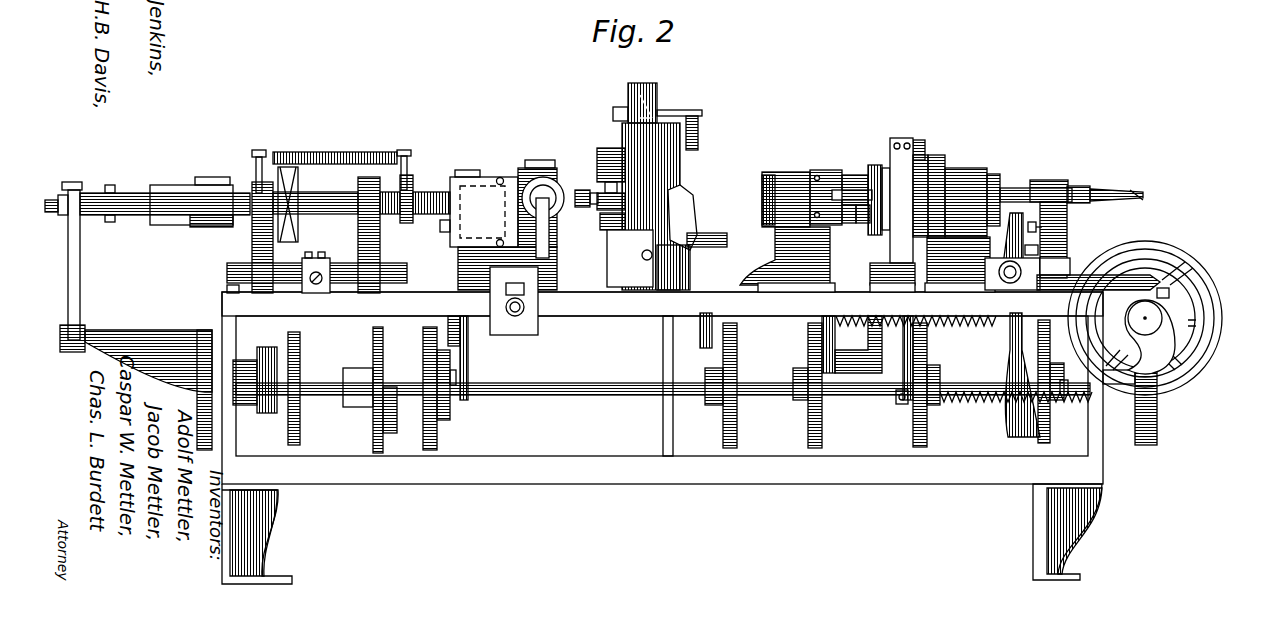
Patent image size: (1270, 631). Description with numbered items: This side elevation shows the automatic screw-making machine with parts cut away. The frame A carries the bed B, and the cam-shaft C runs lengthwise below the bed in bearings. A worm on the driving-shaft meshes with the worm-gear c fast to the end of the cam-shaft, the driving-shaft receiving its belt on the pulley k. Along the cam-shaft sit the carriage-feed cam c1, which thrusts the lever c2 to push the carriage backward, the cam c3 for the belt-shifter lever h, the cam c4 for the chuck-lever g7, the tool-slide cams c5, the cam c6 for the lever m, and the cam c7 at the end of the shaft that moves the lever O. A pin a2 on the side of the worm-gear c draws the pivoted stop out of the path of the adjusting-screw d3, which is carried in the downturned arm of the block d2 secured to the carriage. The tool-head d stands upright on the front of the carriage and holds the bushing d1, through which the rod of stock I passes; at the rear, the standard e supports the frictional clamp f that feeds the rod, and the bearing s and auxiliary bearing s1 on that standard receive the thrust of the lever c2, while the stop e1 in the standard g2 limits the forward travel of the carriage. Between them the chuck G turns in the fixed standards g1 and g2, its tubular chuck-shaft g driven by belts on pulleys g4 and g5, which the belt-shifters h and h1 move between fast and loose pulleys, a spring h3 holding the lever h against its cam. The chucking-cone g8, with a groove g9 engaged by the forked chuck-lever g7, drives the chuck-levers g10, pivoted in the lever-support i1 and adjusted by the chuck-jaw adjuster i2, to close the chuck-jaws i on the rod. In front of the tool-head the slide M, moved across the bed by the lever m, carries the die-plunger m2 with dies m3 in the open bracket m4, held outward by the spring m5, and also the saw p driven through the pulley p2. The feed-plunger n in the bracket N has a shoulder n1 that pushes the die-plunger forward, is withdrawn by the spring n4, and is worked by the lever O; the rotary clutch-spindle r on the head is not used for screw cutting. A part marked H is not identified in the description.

The frame A is at (662, 438).
The bed B is at (662, 304).
The cam-shaft C is at (663, 401).
The worm-gear c is at (1157, 412).
The carriage-feed cam c1 is at (1051, 425).
The lever c2 is at (1031, 256).
The cam c3 is at (928, 425).
The cam c4 is at (823, 428).
The tool-slide cams c5 is at (738, 432).
The cam c6 is at (438, 437).
The cam c7 is at (175, 330).
The pin a2 is at (1118, 384).
The lever O is at (75, 278).
The feed-plunger n is at (165, 193).
The rotary clutch-spindle r is at (222, 185).
The bracket N is at (317, 230).
The spring n4 is at (368, 145).
The shoulder n1 is at (413, 188).
The spring m5 is at (390, 214).
The die-plunger m2 is at (422, 214).
The lever m is at (472, 358).
The slide M is at (503, 218).
The open bracket m4 is at (545, 168).
The dies m3 is at (583, 207).
The saw p is at (566, 222).
The pulley p2 is at (600, 160).
The tool-head d is at (620, 110).
The bushing d1 is at (688, 200).
The block d2 is at (1074, 275).
The adjusting-screw d3 is at (1169, 292).
The fixed standard g1 is at (800, 172).
The lever-support i1 is at (826, 175).
The chuck-jaw adjuster i2 is at (778, 232).
The chuck G is at (852, 170).
The chucking-cone g8 is at (858, 175).
The groove g9 is at (876, 168).
The chuck-levers g10 is at (848, 218).
The chuck-shaft g is at (863, 223).
The belt-shifter h is at (917, 140).
The belt-shifter h1 is at (892, 215).
The spring h3 is at (994, 398).
The pulley g4 is at (922, 155).
The pulley g5 is at (938, 155).
The fixed standard g2 is at (978, 170).
The chuck-lever g7 is at (822, 358).
The standard e is at (1056, 180).
The stop e1 is at (995, 275).
The frictional clamp f is at (1105, 191).
The rod of stock I is at (1135, 192).
The bearing s is at (1052, 265).
The auxiliary bearing s1 is at (1031, 222).
The chuck-jaws i is at (978, 322).
The eccentric hub H is at (1130, 312).
The pulley k is at (1222, 318).